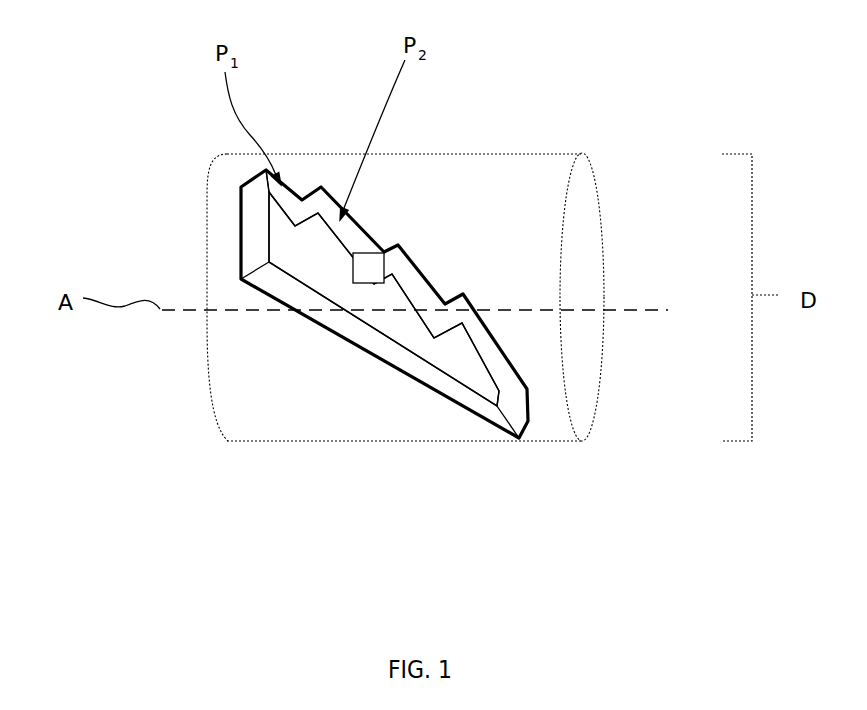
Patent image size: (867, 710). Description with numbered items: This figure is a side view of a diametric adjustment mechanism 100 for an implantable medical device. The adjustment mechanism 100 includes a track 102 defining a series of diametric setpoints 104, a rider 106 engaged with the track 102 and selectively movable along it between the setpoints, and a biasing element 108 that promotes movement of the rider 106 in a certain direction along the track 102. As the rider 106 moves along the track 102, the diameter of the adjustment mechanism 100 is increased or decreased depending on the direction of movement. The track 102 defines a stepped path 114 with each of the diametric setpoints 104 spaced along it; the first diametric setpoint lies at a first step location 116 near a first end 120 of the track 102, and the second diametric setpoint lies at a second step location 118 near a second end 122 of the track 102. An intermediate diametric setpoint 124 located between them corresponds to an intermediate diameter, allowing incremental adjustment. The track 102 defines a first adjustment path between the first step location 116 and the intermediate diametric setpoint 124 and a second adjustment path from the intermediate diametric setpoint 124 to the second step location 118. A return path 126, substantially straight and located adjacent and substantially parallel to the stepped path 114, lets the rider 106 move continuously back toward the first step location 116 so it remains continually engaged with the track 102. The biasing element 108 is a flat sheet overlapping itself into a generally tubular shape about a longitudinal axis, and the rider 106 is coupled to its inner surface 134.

The diametric adjustment mechanism 100 is at (72, 70).
The track 102 is at (420, 410).
The series of diametric setpoints 104 is at (463, 296).
The rider 106 is at (366, 252).
The biasing element 108 is at (235, 380).
The stepped path 114 is at (312, 192).
The first step location 116 is at (266, 170).
The second step location 118 is at (460, 290).
The first end 120 is at (242, 237).
The second end 122 is at (527, 400).
The intermediate diametric setpoint 124 is at (321, 187).
The return path 126 is at (348, 340).
The inner surface 134 is at (582, 208).